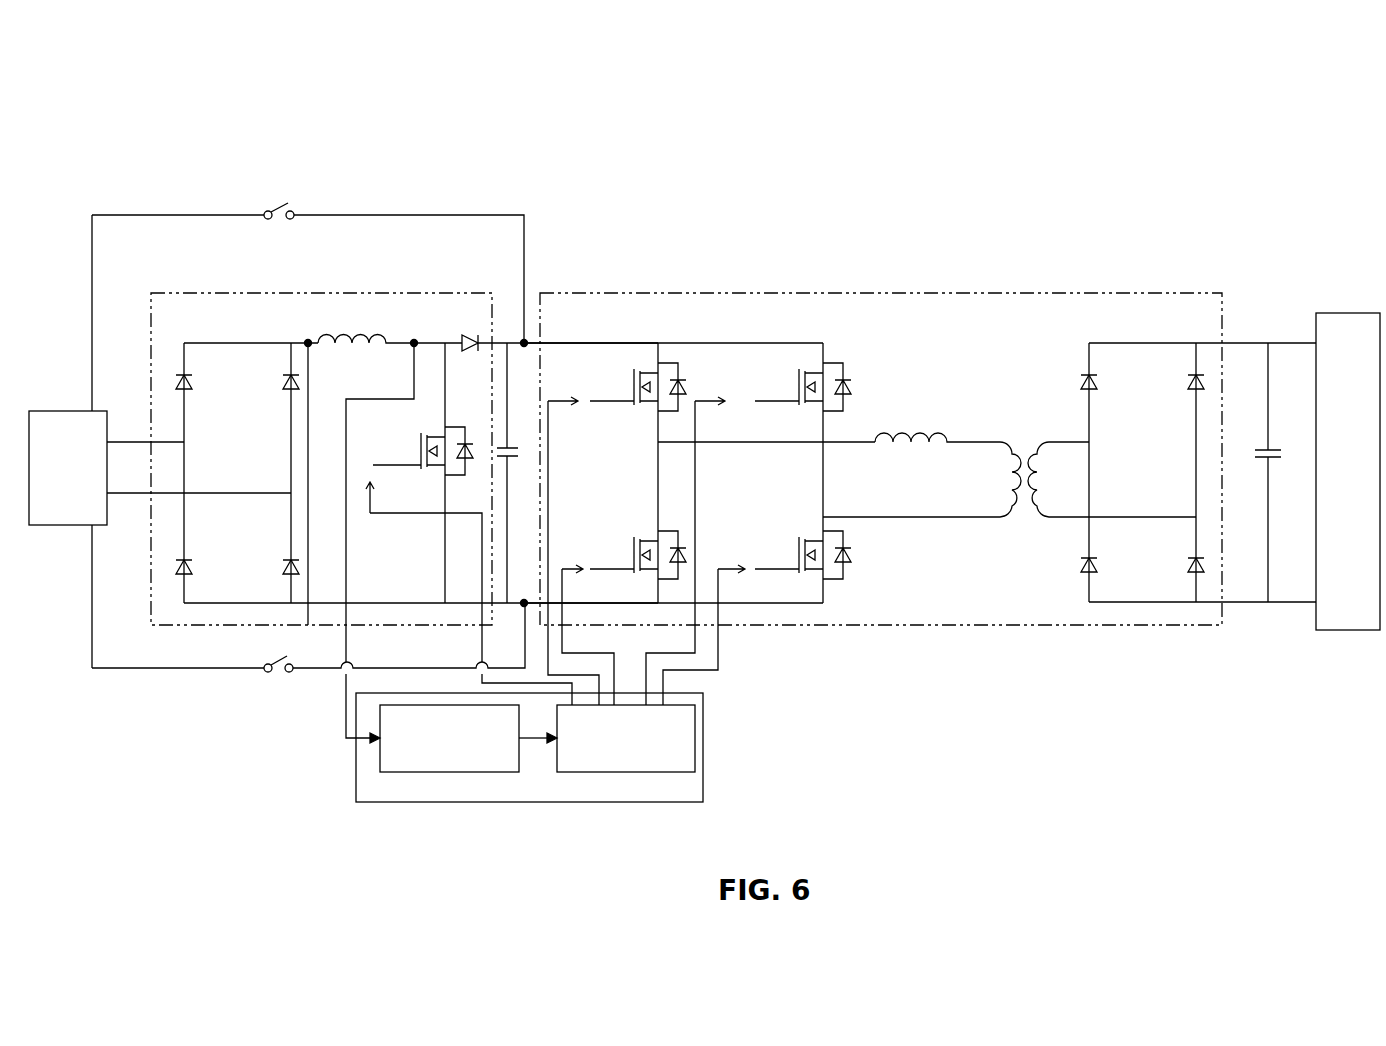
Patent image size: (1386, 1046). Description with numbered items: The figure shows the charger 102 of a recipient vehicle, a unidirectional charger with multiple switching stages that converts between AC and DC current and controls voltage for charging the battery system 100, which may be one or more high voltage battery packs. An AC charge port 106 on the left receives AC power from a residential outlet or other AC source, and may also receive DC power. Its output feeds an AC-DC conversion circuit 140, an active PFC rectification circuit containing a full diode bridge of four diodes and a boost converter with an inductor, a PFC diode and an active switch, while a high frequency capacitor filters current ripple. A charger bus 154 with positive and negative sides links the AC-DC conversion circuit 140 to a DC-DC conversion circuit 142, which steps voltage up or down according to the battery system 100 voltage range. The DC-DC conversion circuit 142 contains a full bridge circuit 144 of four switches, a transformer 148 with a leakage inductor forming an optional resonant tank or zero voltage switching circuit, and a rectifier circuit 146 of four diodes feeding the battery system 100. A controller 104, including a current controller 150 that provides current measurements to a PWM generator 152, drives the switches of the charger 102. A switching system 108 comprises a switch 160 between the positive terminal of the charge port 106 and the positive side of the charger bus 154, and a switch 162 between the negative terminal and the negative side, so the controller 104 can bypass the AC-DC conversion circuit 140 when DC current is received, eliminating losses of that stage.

The battery system 100 is at (1352, 313).
The charger 102 is at (973, 126).
The controller 104 is at (574, 768).
The AC charge port 106 is at (53, 423).
The switching system 108 is at (172, 690).
The AC-DC conversion circuit 140 is at (410, 292).
The DC-DC conversion circuit 142 is at (1088, 292).
The full bridge circuit 144 is at (731, 316).
The rectifier circuit 146 is at (1160, 314).
The transformer 148 is at (1056, 417).
The current controller 150 is at (520, 765).
The PWM generator 152 is at (703, 718).
The charger bus 154 is at (572, 342).
The switch 160 is at (267, 210).
The switch 162 is at (291, 673).